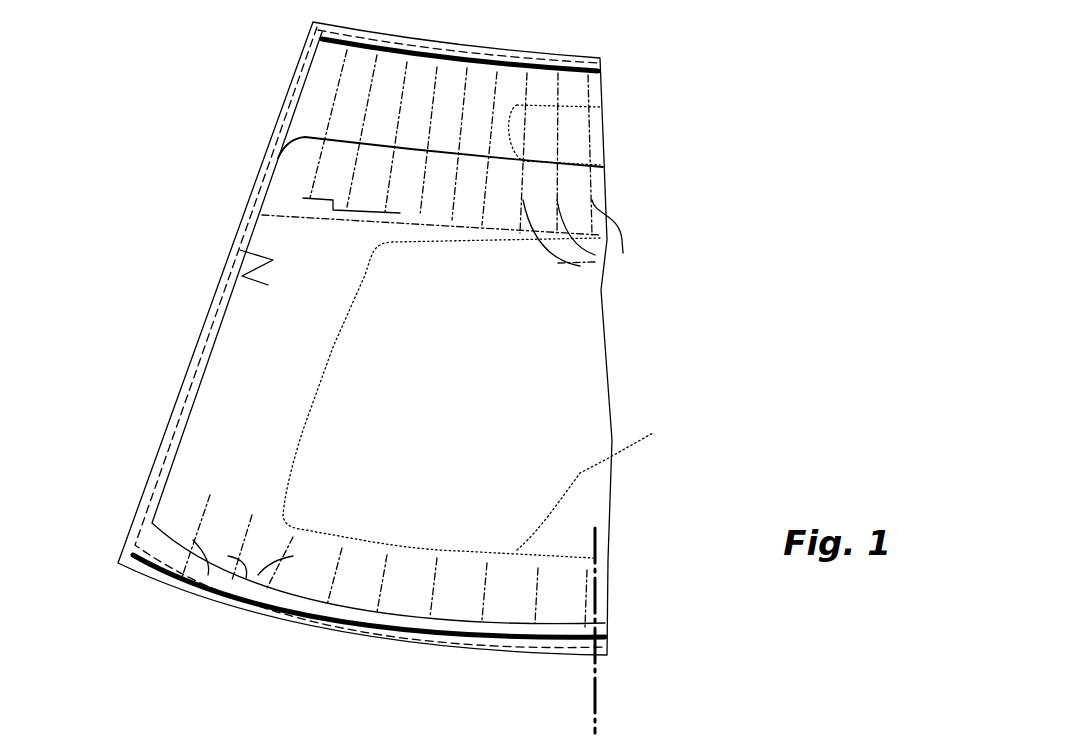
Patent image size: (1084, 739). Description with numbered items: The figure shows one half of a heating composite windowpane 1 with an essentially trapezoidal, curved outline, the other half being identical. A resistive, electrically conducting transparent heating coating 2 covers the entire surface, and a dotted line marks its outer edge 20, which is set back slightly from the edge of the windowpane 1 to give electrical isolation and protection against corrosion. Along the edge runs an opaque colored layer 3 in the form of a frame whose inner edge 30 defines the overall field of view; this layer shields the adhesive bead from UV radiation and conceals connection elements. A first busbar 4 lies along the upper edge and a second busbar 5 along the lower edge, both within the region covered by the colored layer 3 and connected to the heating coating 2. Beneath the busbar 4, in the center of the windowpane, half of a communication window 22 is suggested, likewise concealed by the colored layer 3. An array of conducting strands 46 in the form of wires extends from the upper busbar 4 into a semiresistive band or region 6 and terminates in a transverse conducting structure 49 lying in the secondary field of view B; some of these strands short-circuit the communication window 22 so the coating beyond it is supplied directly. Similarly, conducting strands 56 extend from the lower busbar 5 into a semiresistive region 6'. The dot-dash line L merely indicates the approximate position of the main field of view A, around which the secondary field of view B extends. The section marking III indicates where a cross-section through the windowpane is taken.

The heating composite windowpane 1 is at (232, 77).
The heating coating 2 is at (471, 393).
The opaque colored layer 3 is at (308, 110).
The first busbar 4 is at (601, 68).
The second busbar 5 is at (610, 638).
The semiresistive band or region 6 is at (608, 168).
The semiresistive band or region 6' is at (616, 602).
The outer edge of the heating coating 20 is at (228, 280).
The communication window 22 is at (545, 107).
The inner edge of the colored layer 30 is at (240, 250).
The conducting strands 46 is at (622, 251).
The transverse conducting structure 49 is at (300, 205).
The conducting strands 56 is at (256, 572).
The field of view A is at (410, 433).
The secondary field of view B is at (233, 423).
The dot-dash line L is at (672, 453).
The section line III- III is at (600, 543).